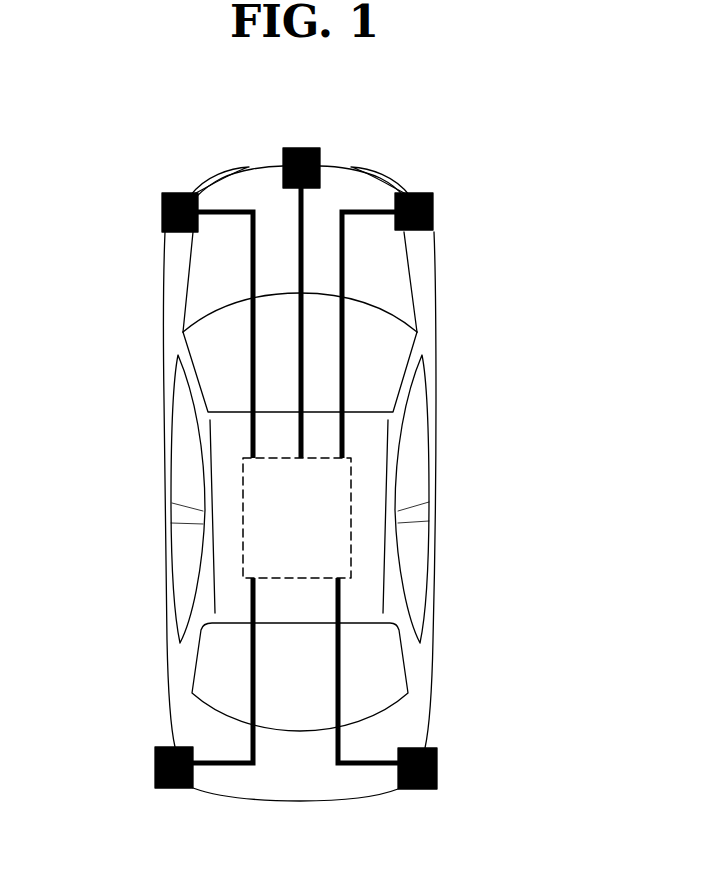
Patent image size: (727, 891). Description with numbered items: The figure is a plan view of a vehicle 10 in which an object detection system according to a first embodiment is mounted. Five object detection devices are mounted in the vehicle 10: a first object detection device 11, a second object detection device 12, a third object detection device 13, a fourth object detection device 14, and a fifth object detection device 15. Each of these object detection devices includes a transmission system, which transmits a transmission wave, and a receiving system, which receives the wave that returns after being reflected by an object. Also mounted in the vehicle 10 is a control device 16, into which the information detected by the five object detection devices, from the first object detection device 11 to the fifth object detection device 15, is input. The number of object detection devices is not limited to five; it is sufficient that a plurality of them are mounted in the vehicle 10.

The vehicle 10 is at (165, 478).
The first object detection device 11 is at (433, 210).
The second object detection device 12 is at (437, 765).
The third object detection device 13 is at (320, 150).
The fourth object detection device 14 is at (162, 207).
The fifth object detection device 15 is at (155, 762).
The control device 16 is at (352, 532).